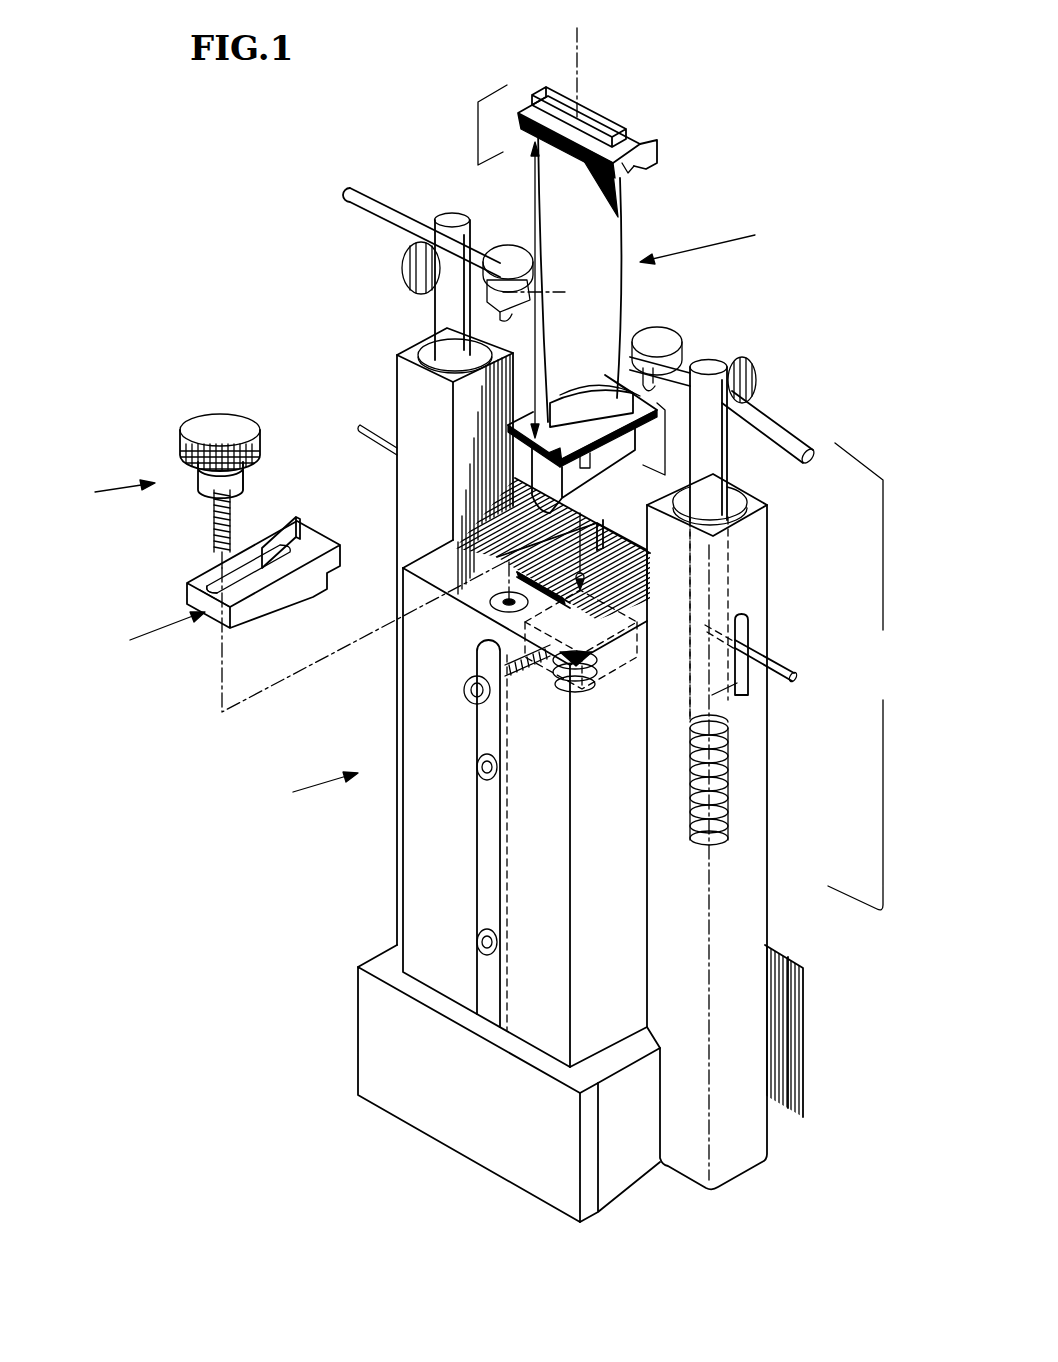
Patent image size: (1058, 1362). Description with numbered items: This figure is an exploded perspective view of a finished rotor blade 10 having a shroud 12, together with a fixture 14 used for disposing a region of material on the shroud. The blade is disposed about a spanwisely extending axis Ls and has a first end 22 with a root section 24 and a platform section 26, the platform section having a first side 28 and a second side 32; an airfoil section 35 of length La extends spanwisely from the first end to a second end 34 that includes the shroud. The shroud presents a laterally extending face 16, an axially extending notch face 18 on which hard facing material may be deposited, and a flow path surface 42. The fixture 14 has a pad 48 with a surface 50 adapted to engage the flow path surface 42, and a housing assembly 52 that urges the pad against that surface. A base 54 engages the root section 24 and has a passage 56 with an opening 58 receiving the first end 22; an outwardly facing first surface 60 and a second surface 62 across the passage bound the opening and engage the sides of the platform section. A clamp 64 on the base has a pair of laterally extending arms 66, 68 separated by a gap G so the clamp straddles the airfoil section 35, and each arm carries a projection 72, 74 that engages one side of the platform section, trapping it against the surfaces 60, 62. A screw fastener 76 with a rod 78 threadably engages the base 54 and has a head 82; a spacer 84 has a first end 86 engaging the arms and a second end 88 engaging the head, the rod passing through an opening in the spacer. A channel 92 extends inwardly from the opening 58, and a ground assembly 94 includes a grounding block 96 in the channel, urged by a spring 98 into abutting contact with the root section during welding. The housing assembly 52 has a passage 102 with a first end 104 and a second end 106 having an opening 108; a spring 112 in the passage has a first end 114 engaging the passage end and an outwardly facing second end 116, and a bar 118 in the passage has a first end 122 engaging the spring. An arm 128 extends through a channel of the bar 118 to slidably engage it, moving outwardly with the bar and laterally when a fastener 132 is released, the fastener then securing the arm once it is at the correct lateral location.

The rotor blade 10 is at (700, 237).
The shroud 12 is at (548, 100).
The fixture 14 is at (298, 790).
The face 16 is at (613, 128).
The notch face 18 is at (636, 166).
The first end 22 is at (662, 439).
The root section 24 is at (537, 490).
The platform section 26 is at (623, 378).
The first side 28 is at (520, 422).
The second side 32 is at (600, 412).
The second end 34 is at (500, 261).
The airfoil section 35 is at (593, 298).
The flow path surface 42 is at (624, 172).
The pad 48 is at (673, 330).
The surface 50 is at (650, 342).
The housing assembly 52 is at (864, 676).
The base 54 is at (418, 890).
The passage 56 is at (575, 548).
The opening 58 is at (575, 573).
The first surface 60 is at (508, 592).
The second surface 62 is at (600, 575).
The clamp 64 is at (145, 637).
The arm 66 is at (246, 552).
The arm 68 is at (248, 592).
The projection 72 is at (290, 540).
The projection 74 is at (325, 587).
The screw fastener 76 is at (276, 595).
The rod 78 is at (213, 516).
The head 82 is at (233, 440).
The spacer 84 is at (247, 478).
The first end 86 is at (207, 490).
The second end 88 is at (200, 461).
The channel 92 is at (560, 597).
The ground assembly 94 is at (645, 547).
The grounding block 96 is at (575, 594).
The spring 98 is at (546, 680).
The passage 102 is at (748, 625).
The first end 104 is at (730, 842).
The second end 106 is at (750, 513).
The opening 108 is at (720, 482).
The spring 112 is at (725, 798).
The first end 114 is at (728, 836).
The second end 116 is at (722, 750).
The bar 118 is at (712, 364).
The first end 122 is at (720, 724).
The arm 128 is at (800, 442).
The fastener 132 is at (752, 382).
The gap G is at (257, 567).
The length La is at (533, 252).
The spanwisely extending axis Ls is at (578, 62).